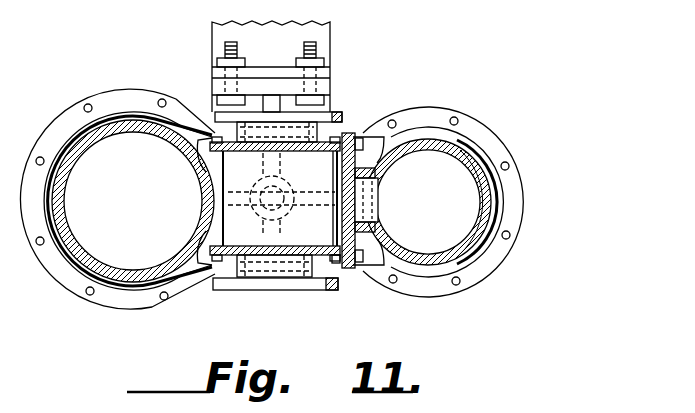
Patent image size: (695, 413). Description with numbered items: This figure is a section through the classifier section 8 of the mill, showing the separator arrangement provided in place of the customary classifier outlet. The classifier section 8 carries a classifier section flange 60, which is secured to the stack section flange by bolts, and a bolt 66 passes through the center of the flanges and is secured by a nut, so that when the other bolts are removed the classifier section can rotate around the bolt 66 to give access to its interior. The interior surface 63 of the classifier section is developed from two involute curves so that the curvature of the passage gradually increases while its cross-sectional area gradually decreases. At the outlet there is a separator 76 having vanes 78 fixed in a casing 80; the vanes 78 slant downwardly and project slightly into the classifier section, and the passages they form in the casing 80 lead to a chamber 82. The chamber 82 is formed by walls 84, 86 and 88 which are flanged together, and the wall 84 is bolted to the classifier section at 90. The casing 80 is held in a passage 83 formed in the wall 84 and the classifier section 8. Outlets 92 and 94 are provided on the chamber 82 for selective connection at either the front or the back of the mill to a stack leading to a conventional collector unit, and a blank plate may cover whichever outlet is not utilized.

The classifier section 8 is at (477, 162).
The classifier section flange 60 is at (52, 265).
The interior surface 63 is at (78, 155).
The bolt 66 is at (281, 200).
The separator 76 is at (390, 208).
The vanes 78 is at (343, 193).
The casing 80 is at (373, 173).
The chamber 82 is at (243, 227).
The passage 83 is at (329, 199).
The wall 84 is at (213, 268).
The wall 86 is at (333, 263).
The wall 88 is at (230, 140).
The bolted connection 90 is at (350, 140).
The outlet 92 is at (338, 112).
The outlet 94 is at (262, 291).